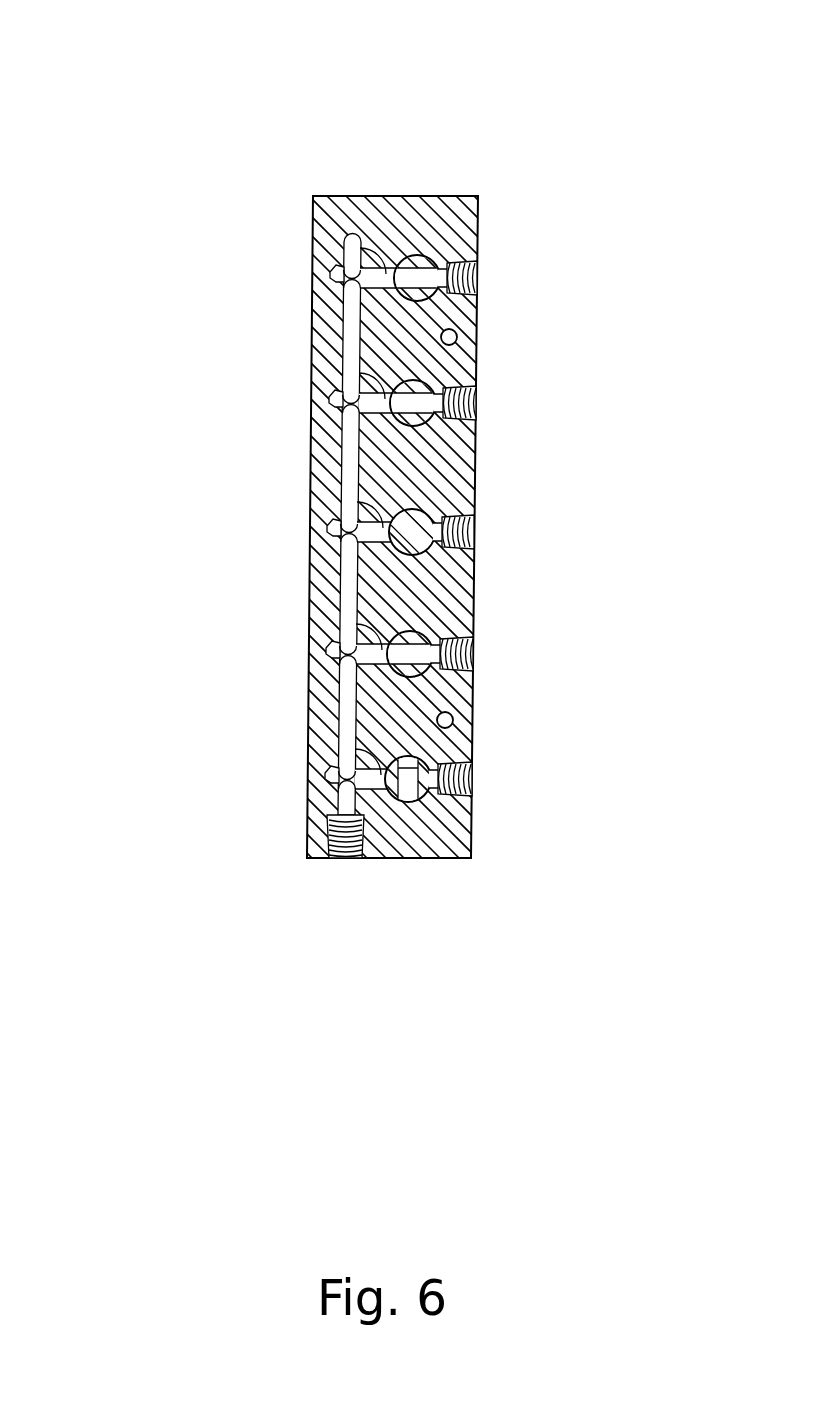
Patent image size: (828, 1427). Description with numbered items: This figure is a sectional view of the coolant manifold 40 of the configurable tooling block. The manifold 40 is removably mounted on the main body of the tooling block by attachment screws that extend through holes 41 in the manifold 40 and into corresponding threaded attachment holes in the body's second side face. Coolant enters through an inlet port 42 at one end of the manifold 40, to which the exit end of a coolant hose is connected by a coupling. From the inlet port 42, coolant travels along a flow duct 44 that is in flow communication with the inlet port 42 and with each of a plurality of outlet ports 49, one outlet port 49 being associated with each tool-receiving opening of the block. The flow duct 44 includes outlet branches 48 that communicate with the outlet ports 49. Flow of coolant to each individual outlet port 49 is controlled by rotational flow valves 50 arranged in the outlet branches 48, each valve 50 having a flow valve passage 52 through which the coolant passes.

The coolant manifold 40 is at (268, 128).
The holes 41 is at (465, 347).
The inlet port 42 is at (358, 843).
The flow duct 44 is at (348, 582).
The outlet branches 48 is at (368, 274).
The outlet ports 49 is at (466, 281).
The rotational flow valves 50 is at (417, 258).
The flow valve passage 52 is at (364, 528).